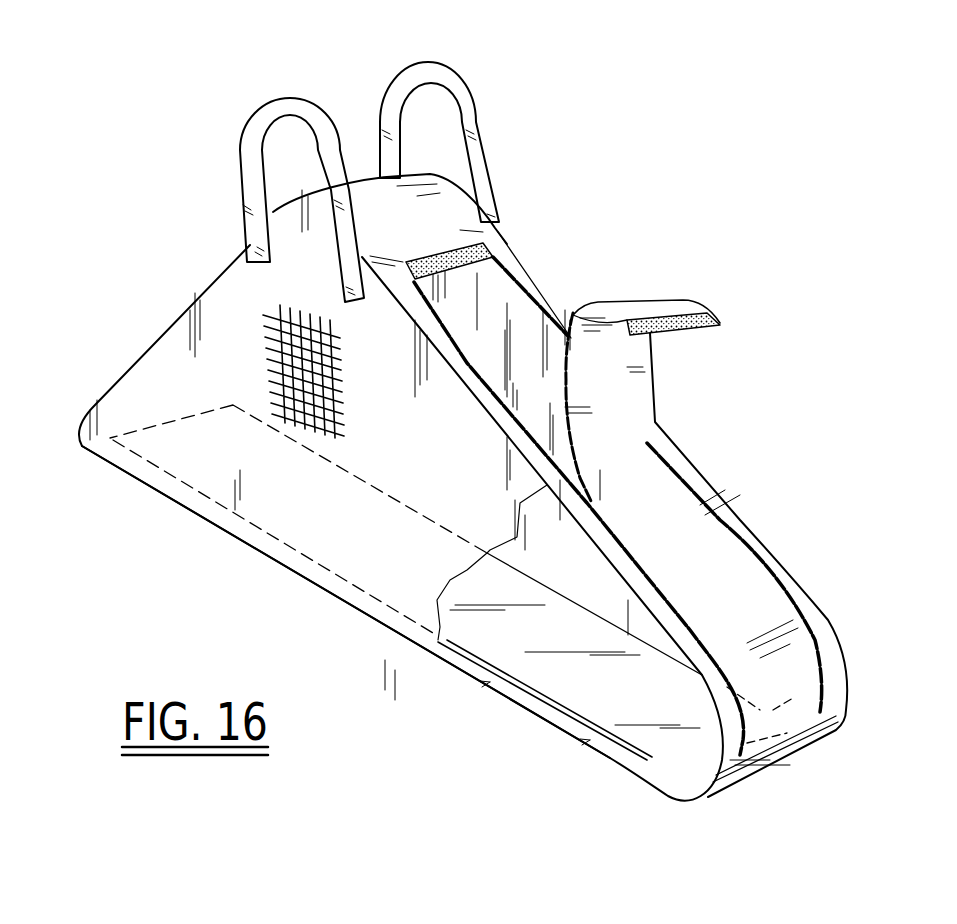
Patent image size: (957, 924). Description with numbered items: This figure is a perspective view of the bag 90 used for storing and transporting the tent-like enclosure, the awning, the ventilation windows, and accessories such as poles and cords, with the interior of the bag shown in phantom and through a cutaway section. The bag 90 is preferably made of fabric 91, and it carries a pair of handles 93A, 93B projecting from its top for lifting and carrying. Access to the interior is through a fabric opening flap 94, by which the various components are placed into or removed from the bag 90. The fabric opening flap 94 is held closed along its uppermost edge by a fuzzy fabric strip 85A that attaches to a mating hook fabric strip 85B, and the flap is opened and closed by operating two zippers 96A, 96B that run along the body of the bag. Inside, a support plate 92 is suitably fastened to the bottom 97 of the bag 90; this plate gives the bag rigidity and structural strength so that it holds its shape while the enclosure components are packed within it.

The bag 90 is at (623, 271).
The fabric 91 is at (250, 373).
The support plate 92 is at (553, 682).
The handle 93A is at (288, 92).
The handle 93B is at (443, 62).
The fabric opening flap 94 is at (632, 388).
The fuzzy fabric strip 85A is at (713, 313).
The hook fabric strip 85B is at (488, 247).
The zipper 96A is at (775, 574).
The zipper 96B is at (643, 557).
The bottom 97 is at (347, 594).